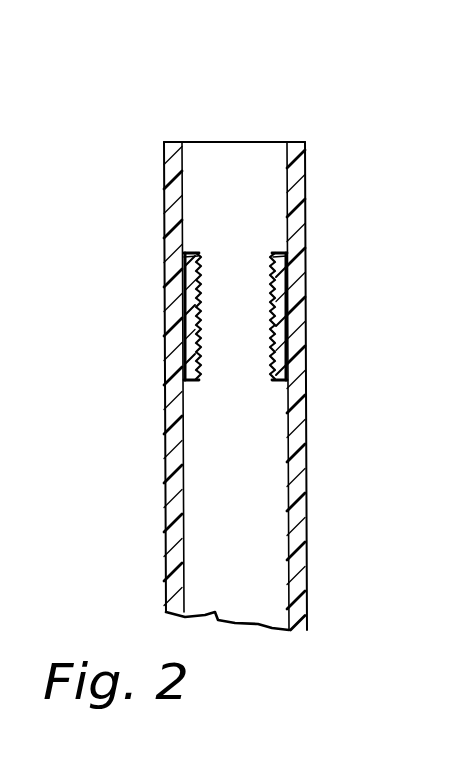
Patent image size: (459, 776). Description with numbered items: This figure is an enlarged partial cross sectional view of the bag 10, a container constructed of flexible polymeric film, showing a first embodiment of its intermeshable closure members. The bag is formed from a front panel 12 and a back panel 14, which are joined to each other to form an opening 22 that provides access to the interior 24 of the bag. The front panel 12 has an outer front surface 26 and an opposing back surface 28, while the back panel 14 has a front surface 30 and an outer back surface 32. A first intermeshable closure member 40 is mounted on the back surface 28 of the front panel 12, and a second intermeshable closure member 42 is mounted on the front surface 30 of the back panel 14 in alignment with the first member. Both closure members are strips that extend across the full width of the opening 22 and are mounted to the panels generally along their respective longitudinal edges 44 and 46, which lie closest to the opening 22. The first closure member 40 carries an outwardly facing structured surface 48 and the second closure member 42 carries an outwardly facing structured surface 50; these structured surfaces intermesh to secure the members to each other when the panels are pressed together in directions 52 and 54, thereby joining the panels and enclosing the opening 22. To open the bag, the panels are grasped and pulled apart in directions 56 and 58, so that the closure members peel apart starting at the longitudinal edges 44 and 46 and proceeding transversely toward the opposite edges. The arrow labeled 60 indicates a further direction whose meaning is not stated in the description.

The bag 10 is at (135, 63).
The front panel 12 is at (300, 497).
The back panel 14 is at (168, 493).
The opening 22 is at (218, 126).
The interior 24 is at (250, 153).
The front surface 26 is at (305, 568).
The back surface 28 is at (284, 200).
The front surface 30 is at (184, 180).
The back surface 32 is at (165, 552).
The first intermeshable closure member 40 is at (290, 370).
The second intermeshable closure member 42 is at (184, 379).
The longitudinal edge 44 is at (280, 262).
The longitudinal edge 46 is at (186, 262).
The structured surface 48 is at (274, 334).
The structured surface 50 is at (198, 338).
The direction 52 is at (329, 290).
The direction 54 is at (149, 294).
The direction 56 is at (320, 147).
The direction 58 is at (118, 141).
The direction 60 is at (232, 202).